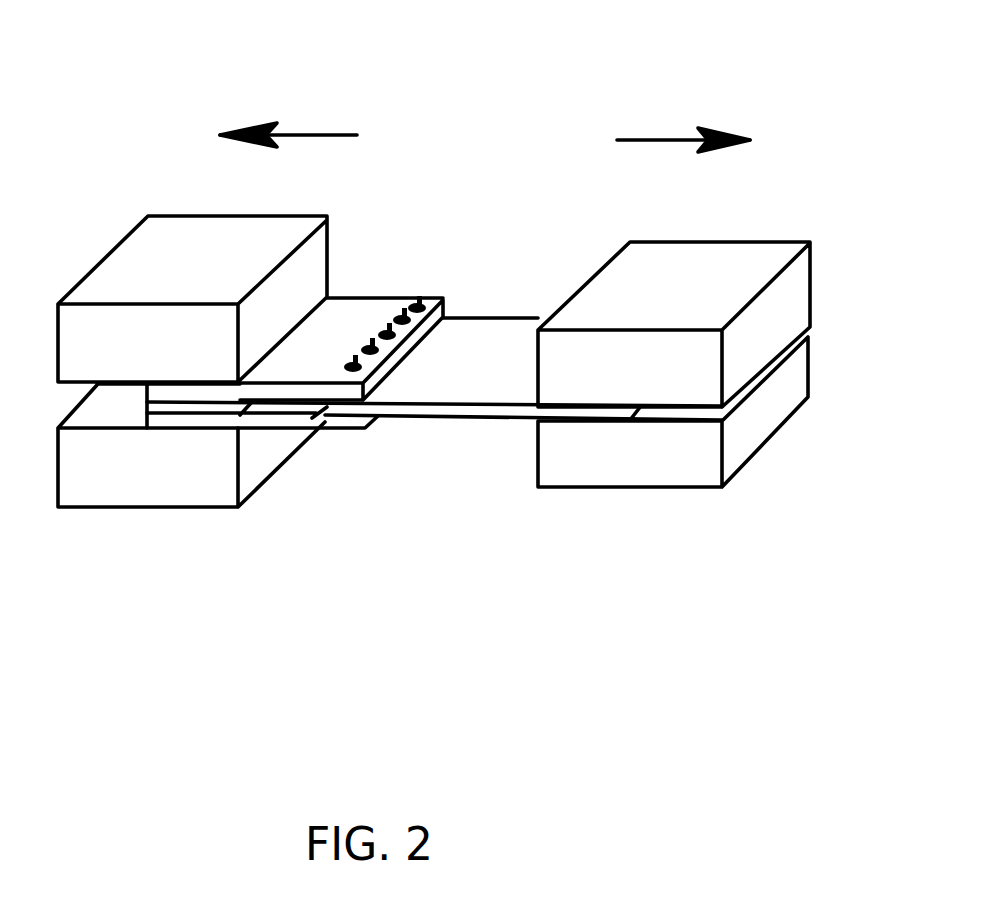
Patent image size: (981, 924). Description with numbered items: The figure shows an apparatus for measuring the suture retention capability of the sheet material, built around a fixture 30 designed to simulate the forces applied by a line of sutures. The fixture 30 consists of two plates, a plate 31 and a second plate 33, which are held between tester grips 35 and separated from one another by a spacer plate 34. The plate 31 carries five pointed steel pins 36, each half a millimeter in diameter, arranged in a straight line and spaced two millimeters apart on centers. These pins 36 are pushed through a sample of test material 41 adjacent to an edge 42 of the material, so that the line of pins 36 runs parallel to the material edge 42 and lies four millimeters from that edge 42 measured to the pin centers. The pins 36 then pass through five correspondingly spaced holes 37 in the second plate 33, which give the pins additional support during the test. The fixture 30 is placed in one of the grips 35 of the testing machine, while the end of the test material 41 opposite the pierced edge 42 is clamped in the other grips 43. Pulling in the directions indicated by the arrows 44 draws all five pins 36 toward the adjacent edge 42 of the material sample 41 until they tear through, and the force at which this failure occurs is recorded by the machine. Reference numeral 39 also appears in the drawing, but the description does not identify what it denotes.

The fixture 30 is at (348, 268).
The plate 31 is at (327, 430).
The second plate 33 is at (403, 316).
The spacer plate 34 is at (172, 414).
The tester grips 35 is at (57, 447).
The pins 36 is at (415, 309).
The holes 37 is at (375, 355).
The bonding bumps 39 is at (387, 343).
The test material 41 is at (488, 417).
The edge 42 is at (318, 408).
The grips 43 is at (810, 370).
The arrows 44 is at (645, 137).